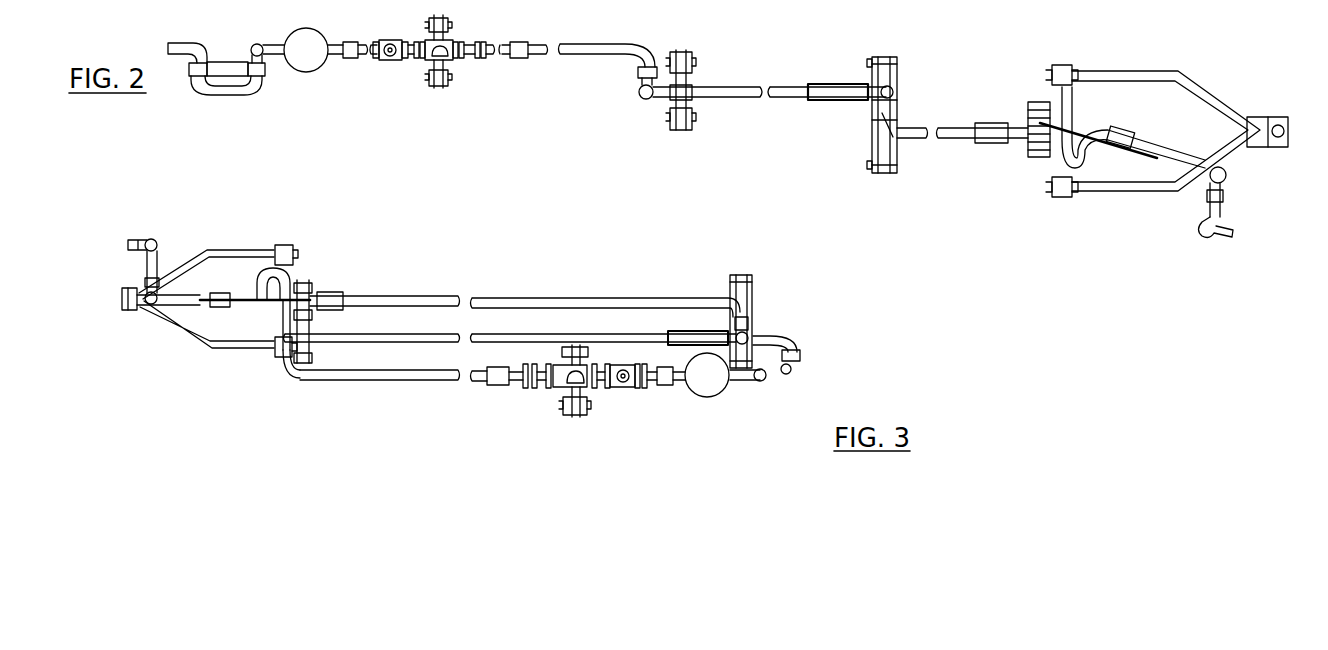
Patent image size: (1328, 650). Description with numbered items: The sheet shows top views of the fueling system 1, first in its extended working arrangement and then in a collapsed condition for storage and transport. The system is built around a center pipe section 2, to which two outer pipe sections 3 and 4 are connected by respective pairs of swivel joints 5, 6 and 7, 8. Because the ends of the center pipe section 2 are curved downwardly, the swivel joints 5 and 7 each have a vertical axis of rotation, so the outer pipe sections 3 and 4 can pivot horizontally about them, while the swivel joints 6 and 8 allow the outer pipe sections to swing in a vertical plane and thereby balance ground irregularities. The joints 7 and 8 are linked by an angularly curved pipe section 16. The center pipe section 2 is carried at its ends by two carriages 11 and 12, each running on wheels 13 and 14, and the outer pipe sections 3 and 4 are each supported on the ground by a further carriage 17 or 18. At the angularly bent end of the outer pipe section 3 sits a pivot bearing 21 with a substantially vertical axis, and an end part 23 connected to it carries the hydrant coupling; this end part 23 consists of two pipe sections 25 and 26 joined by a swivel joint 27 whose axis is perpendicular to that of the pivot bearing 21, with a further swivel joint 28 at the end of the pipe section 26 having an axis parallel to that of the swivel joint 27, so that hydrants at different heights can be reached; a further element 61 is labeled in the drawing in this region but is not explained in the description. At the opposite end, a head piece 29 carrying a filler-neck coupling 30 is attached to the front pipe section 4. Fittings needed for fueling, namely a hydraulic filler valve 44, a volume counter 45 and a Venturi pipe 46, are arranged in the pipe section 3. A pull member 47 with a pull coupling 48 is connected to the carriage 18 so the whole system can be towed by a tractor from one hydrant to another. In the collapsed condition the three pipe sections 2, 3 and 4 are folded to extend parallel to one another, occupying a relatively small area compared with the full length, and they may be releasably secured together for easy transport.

In FIG. 2, the fueling system 1 is at (750, 117).
In FIG. 3, the fueling system 1 is at (690, 288).
In FIG. 2, the center pipe section 2 is at (745, 85).
In FIG. 3, the center pipe section 2 is at (511, 333).
In FIG. 2, the outer pipe section 3 is at (539, 44).
In FIG. 3, the outer pipe section 3 is at (397, 381).
In FIG. 2, the outer pipe section 4 is at (954, 127).
In FIG. 3, the outer pipe section 4 is at (390, 295).
In FIG. 2, the swivel joint 5 is at (645, 100).
In FIG. 3, the swivel joint 5 is at (291, 372).
In FIG. 2, the swivel joint 6 is at (646, 65).
In FIG. 3, the swivel joint 6 is at (750, 314).
In FIG. 2, the swivel joint 7 is at (894, 88).
In FIG. 3, the swivel joint 7 is at (750, 335).
In FIG. 2, the swivel joint 8 is at (893, 113).
In FIG. 2, the carriage 11 is at (681, 50).
In FIG. 2, the carriage 12 is at (891, 173).
In FIG. 3, the carriage 12 is at (742, 357).
In FIG. 2, the wheels 13 is at (695, 58).
In FIG. 3, the wheels 13 is at (317, 314).
In FIG. 2, the wheels 14 is at (871, 62).
In FIG. 2, the angularly curved pipe section 16 is at (895, 150).
In FIG. 2, the carriage 17 is at (440, 90).
In FIG. 3, the carriage 17 is at (587, 412).
In FIG. 2, the carriage 18 is at (1064, 198).
In FIG. 3, the carriage 18 is at (297, 246).
In FIG. 2, the pivot bearing 21 is at (256, 44).
In FIG. 3, the end part 23 is at (820, 366).
In FIG. 2, the pipe section 25 is at (256, 78).
In FIG. 2, the pipe section 26 is at (227, 89).
In FIG. 2, the swivel joint 27 is at (262, 68).
In FIG. 2, the swivel joint 28 is at (198, 63).
In FIG. 3, the head piece 29 is at (188, 318).
In FIG. 3, the filler-neck coupling 30 is at (150, 239).
In FIG. 2, the hydraulic filler valve 44 is at (388, 60).
In FIG. 2, the volume counter 45 is at (450, 43).
In FIG. 2, the Venturi pipe 46 is at (476, 59).
In FIG. 2, the pull member 47 is at (1138, 71).
In FIG. 3, the pull member 47 is at (214, 348).
In FIG. 2, the pull coupling 48 is at (1277, 124).
In FIG. 3, the pull coupling 48 is at (128, 311).
In FIG. 2, the plate 61 is at (228, 62).